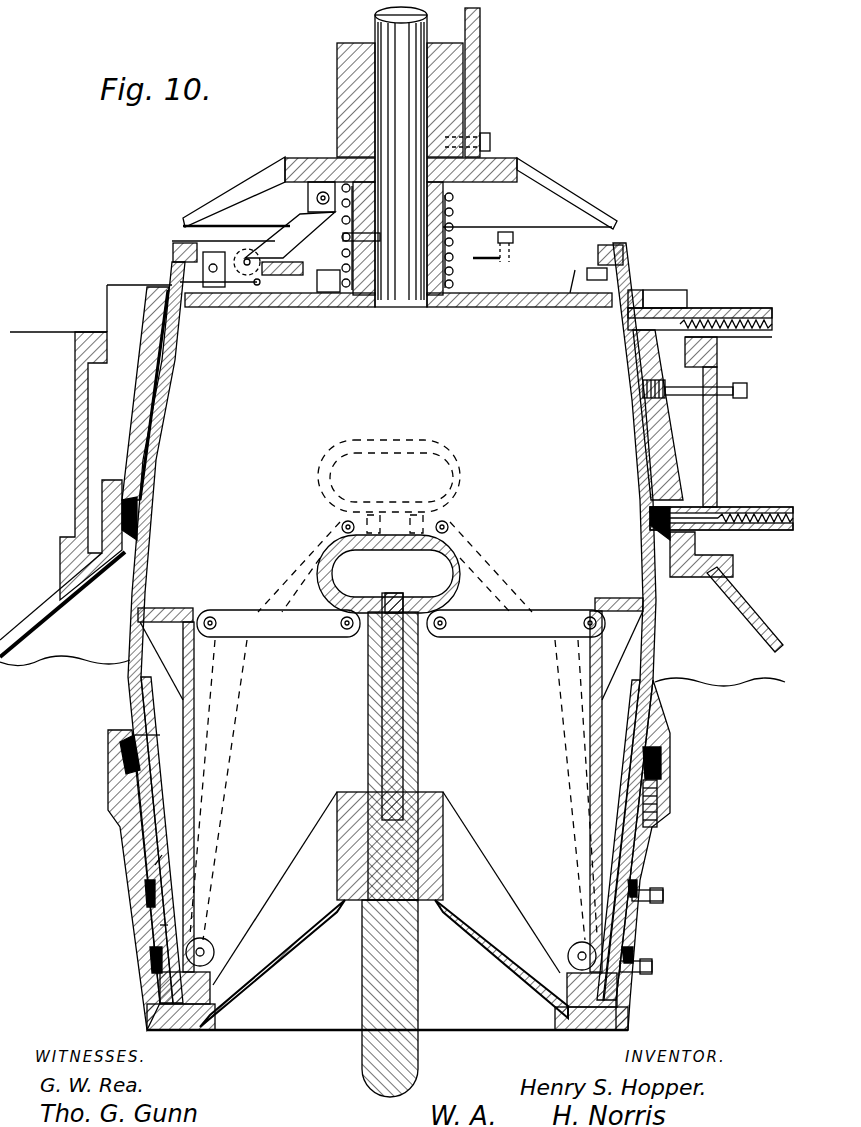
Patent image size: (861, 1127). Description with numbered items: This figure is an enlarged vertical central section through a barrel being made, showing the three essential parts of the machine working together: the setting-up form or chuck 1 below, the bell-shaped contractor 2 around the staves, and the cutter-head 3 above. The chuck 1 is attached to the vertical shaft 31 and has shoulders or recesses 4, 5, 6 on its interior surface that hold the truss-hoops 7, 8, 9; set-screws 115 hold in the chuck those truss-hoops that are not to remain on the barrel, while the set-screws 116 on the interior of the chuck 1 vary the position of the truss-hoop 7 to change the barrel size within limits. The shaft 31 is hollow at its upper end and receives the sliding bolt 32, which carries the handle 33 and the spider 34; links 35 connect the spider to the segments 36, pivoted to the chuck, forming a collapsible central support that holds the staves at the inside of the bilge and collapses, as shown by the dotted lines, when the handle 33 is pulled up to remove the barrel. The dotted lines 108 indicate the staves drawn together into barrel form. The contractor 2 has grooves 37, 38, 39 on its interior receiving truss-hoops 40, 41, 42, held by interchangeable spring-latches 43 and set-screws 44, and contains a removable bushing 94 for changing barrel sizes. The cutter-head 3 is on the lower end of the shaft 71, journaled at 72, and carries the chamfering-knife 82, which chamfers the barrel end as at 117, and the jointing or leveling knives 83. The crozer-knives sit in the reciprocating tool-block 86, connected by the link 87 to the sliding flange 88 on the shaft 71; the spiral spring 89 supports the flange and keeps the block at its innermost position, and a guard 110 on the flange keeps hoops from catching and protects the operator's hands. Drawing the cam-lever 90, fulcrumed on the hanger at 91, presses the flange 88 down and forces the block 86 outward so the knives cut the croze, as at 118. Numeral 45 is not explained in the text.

The setting-up form or chuck 1 is at (384, 855).
The bell-shaped contractor 2 is at (66, 442).
The cutter-head 3 is at (392, 280).
The shoulder or recess 4 is at (390, 768).
The shoulder or recess 5 is at (163, 863).
The shoulder or recess 6 is at (170, 930).
The truss-hoop 7 is at (147, 748).
The truss-hoop 8 is at (162, 840).
The truss-hoop 9 is at (388, 972).
The vertical shaft 31 is at (388, 845).
The sliding bolt 32 is at (393, 592).
The handle 33 is at (388, 567).
The spider 34 is at (407, 756).
The links 35 is at (401, 623).
The segments 36 is at (390, 642).
The recess or groove 37 is at (159, 632).
The recess or groove 38 is at (159, 467).
The recess or groove 39 is at (62, 596).
The truss-hoop 40 is at (637, 621).
The truss-hoop 41 is at (658, 422).
The truss-hoop 42 is at (668, 542).
The spring-latches 43 is at (710, 407).
The set-screws 44 is at (707, 392).
The slide block 45 is at (206, 269).
The vertical shaft 71 is at (401, 157).
The journal 72 is at (340, 100).
The chamfering-knife 82 is at (588, 272).
The jointing or leveling knives 83 is at (493, 257).
The reciprocating tool-block 86 is at (260, 272).
The link 87 is at (290, 235).
The sliding flange 88 is at (401, 159).
The spiral spring 89 is at (461, 240).
The cam-lever 90 is at (486, 82).
The fulcrum 91 is at (479, 142).
The removable bushing 94 is at (657, 290).
The dotted lines (staves) 108 is at (392, 619).
The guard 110 is at (567, 193).
The set-screws 115 is at (660, 927).
The set-screws 116 is at (657, 800).
The chamfer 117 is at (627, 257).
The croze 118 is at (139, 274).